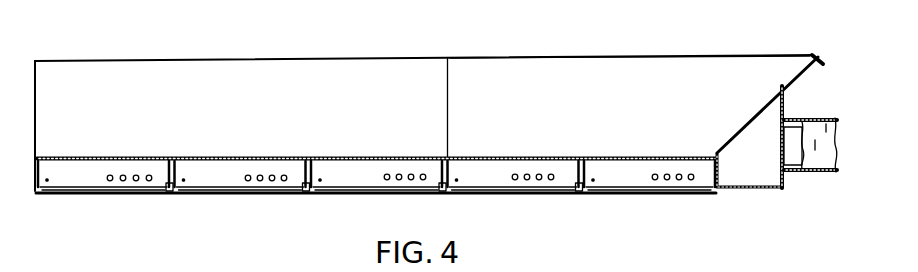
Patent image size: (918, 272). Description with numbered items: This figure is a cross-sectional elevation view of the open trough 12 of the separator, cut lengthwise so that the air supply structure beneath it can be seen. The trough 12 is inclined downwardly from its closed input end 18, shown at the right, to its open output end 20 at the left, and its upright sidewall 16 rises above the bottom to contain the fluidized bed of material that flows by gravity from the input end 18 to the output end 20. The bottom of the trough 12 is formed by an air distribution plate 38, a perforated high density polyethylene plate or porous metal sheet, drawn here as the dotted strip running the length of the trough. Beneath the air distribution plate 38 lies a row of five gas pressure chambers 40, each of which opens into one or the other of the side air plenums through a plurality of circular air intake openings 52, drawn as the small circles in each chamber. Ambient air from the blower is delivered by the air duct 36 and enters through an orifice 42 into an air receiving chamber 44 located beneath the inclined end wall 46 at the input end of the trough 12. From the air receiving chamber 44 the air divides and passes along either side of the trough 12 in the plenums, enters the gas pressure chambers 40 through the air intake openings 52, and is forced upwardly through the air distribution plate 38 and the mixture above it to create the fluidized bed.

The open trough 12 is at (741, 46).
The upright sidewall 16 is at (601, 112).
The closed input end 18 is at (790, 80).
The open output end 20 is at (39, 88).
The air duct 36 is at (816, 104).
The air distribution plate 38 is at (57, 157).
The gas pressure chambers 40 is at (80, 175).
The orifice 42 is at (788, 170).
The air receiving chamber 44 is at (750, 168).
The inclined end wall 46 is at (803, 70).
The circular air intake openings 52 is at (149, 181).